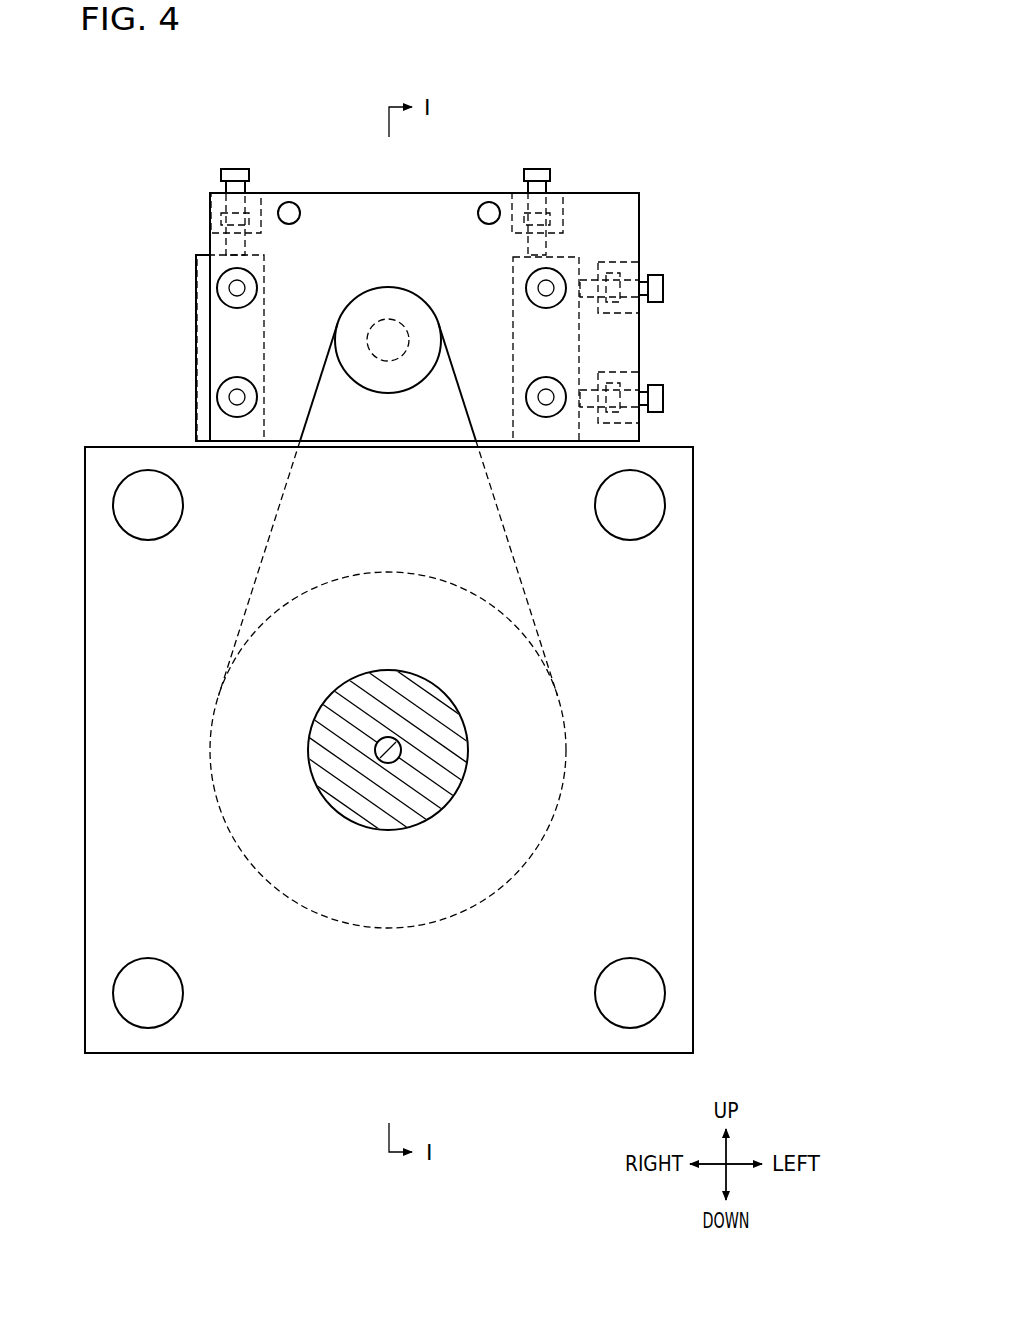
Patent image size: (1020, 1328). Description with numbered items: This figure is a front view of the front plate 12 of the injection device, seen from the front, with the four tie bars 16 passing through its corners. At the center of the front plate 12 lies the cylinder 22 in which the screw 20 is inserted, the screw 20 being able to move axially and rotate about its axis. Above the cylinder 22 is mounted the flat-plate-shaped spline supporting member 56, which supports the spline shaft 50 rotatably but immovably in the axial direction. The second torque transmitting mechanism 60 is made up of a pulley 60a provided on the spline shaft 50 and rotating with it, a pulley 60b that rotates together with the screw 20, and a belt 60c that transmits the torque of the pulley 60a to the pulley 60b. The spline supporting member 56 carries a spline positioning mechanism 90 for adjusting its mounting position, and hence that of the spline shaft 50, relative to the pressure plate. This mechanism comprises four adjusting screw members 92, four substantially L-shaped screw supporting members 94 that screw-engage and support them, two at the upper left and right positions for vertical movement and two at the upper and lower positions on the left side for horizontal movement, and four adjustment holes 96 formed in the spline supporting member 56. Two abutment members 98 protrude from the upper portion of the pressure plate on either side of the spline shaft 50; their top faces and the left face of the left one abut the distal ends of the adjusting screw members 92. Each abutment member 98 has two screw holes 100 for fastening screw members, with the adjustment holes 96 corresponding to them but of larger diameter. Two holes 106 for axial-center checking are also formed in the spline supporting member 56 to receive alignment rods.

The front plate 12 is at (672, 660).
The tie bars 16 is at (150, 523).
The screw 20 is at (390, 757).
The cylinder 22 is at (380, 678).
The spline shaft 50 is at (388, 361).
The spline supporting member 56 is at (623, 205).
The second torque transmitting mechanism 60 is at (387, 283).
The pulley 60a is at (345, 320).
The pulley 60b is at (547, 748).
The belt 60c is at (280, 505).
The spline positioning mechanism 90 is at (592, 118).
The adjusting screw members 92 is at (707, 397).
The screw supporting members 94 is at (211, 230).
The adjustment holes 96 is at (237, 296).
The abutment members 98 is at (512, 325).
The screw holes 100 is at (229, 395).
The holes 106 is at (289, 212).